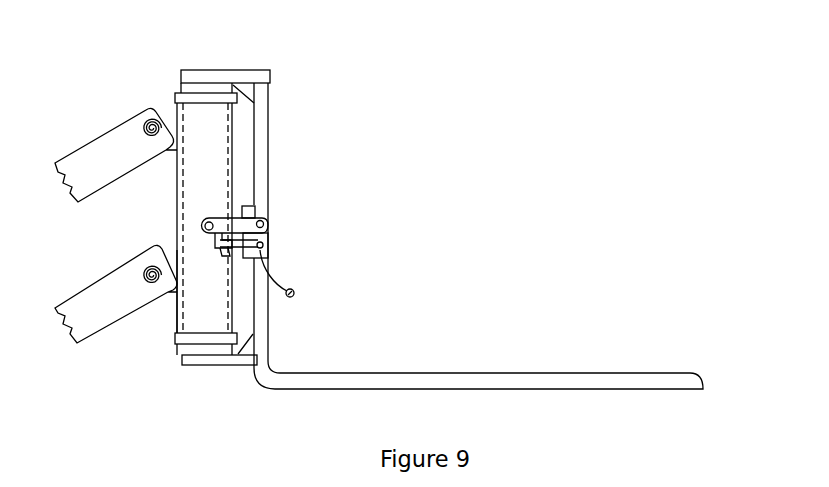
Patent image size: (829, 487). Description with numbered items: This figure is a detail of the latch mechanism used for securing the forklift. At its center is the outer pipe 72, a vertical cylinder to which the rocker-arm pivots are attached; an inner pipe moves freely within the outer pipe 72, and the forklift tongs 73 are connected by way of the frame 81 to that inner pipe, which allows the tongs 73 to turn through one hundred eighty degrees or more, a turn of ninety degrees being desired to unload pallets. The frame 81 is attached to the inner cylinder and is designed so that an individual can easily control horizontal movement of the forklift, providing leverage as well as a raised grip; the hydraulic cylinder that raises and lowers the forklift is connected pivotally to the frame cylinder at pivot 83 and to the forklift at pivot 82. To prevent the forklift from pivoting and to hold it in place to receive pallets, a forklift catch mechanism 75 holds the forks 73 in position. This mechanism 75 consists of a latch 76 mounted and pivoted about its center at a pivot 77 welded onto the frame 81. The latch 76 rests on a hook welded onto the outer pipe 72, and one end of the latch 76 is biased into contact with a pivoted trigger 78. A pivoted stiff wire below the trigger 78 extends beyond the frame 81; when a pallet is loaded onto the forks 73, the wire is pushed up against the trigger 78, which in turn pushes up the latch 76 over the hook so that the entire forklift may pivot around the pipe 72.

The outer pipe 72 is at (180, 350).
The forklift tongs 73 is at (470, 372).
The forklift catch mechanism 75 is at (250, 207).
The latch 76 is at (213, 216).
The pivot 77 is at (266, 230).
The trigger 78 is at (215, 247).
The frame 81 is at (262, 180).
The pivot 82 is at (200, 87).
The pivot 83 is at (153, 122).